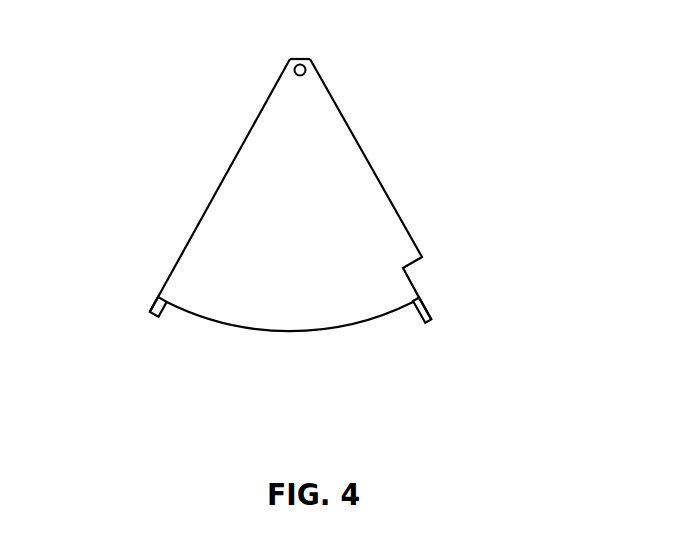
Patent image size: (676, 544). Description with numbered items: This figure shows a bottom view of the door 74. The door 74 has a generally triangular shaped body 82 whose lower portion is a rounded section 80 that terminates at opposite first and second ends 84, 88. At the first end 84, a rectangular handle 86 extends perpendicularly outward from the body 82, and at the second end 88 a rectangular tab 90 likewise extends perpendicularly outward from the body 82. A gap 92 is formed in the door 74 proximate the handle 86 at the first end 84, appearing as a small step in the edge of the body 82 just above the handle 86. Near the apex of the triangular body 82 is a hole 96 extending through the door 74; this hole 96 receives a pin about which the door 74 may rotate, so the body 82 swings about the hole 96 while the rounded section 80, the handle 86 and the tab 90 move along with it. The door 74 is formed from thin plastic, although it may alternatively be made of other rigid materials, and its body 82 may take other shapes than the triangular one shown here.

The door 74 is at (360, 100).
The hole 96 is at (300, 59).
The body 82 is at (237, 182).
The gap 92 is at (428, 266).
The rounded section 80 is at (297, 331).
The rectangular tab 90 is at (157, 318).
The second end 88 is at (130, 301).
The rectangular handle 86 is at (423, 322).
The first end 84 is at (447, 312).